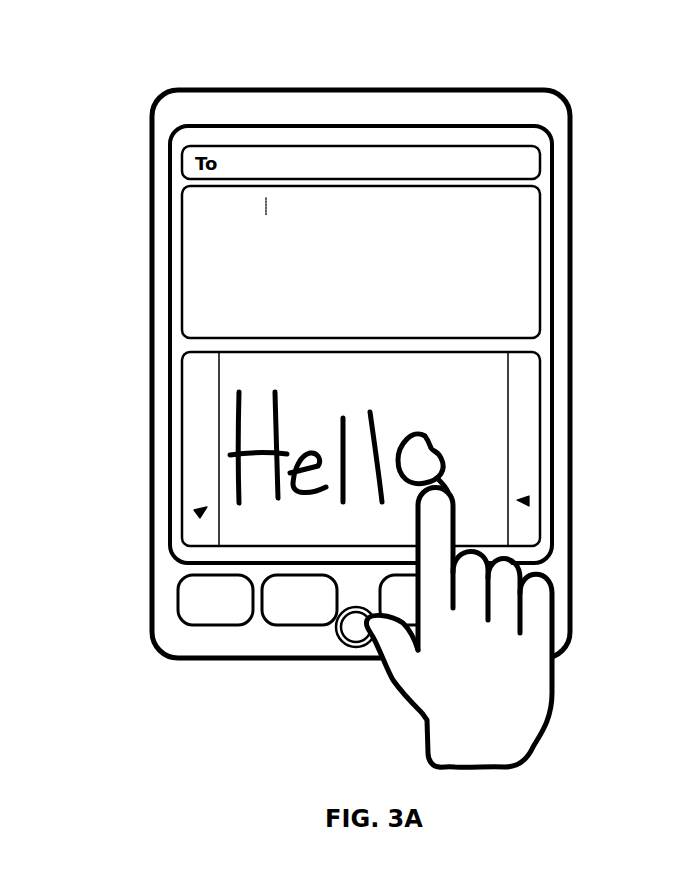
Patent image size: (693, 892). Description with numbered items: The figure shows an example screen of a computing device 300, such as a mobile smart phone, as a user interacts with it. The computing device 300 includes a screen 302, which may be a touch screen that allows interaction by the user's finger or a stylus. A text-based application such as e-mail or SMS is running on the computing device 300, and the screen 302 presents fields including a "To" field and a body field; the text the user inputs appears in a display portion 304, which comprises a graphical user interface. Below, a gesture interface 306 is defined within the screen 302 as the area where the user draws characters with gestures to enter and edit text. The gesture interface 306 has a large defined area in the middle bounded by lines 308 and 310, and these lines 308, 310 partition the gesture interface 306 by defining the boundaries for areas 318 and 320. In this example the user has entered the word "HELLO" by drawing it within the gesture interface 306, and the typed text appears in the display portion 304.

The computing device 300 is at (282, 90).
The screen 302 is at (553, 270).
The display portion 304 is at (537, 206).
The gesture interface 306 is at (183, 470).
The line 308 is at (508, 442).
The line 310 is at (219, 383).
The area 318 is at (520, 500).
The area 320 is at (205, 508).